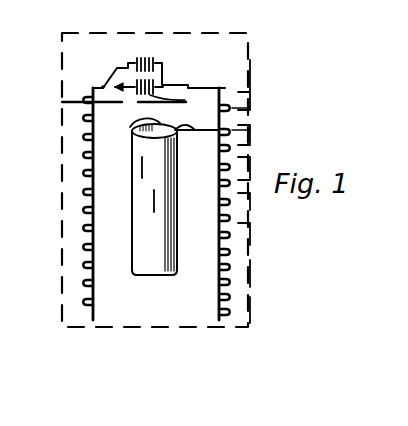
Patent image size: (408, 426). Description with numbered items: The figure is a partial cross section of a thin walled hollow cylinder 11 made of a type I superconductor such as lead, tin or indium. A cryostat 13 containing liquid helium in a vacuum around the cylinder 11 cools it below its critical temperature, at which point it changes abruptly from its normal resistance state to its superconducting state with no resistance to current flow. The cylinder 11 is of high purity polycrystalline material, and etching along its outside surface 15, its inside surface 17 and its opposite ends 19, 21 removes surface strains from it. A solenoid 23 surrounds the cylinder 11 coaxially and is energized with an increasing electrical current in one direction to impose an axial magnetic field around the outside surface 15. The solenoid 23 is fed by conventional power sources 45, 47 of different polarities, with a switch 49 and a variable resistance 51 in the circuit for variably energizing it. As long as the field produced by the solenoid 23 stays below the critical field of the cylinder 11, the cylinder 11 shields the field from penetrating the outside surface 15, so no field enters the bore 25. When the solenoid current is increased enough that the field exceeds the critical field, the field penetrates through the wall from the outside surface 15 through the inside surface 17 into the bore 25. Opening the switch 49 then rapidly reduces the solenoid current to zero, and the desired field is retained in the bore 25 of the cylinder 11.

The thin walled hollow cylinder 11 is at (179, 237).
The cryostat 13 is at (254, 128).
The outside surface 15 is at (141, 186).
The inside surface 17 is at (131, 126).
The end of cylinder 19 is at (207, 147).
The end of cylinder 21 is at (160, 277).
The solenoid 23 is at (250, 93).
The bore 25 is at (140, 278).
The power source 45 is at (179, 100).
The power source 47 is at (155, 53).
The switch 49 is at (103, 87).
The variable resistance 51 is at (173, 87).